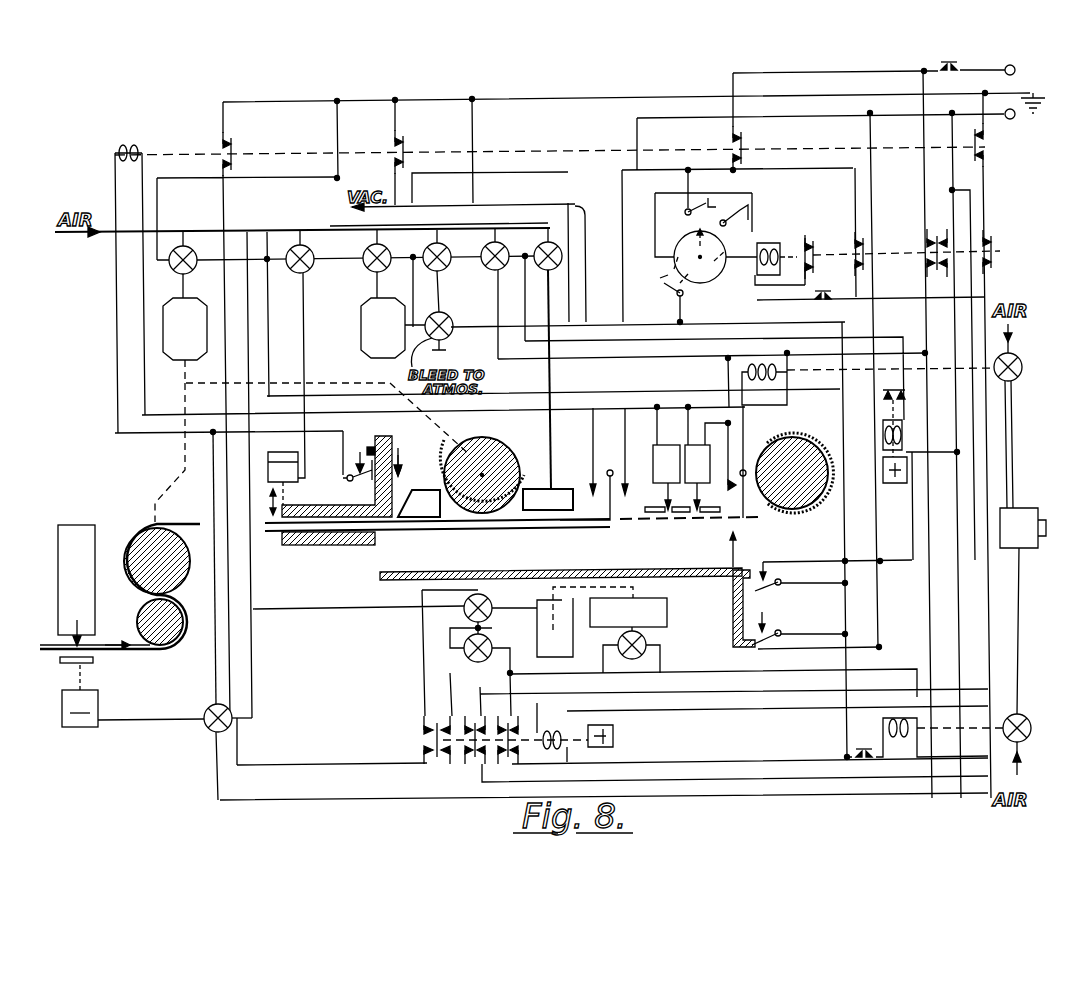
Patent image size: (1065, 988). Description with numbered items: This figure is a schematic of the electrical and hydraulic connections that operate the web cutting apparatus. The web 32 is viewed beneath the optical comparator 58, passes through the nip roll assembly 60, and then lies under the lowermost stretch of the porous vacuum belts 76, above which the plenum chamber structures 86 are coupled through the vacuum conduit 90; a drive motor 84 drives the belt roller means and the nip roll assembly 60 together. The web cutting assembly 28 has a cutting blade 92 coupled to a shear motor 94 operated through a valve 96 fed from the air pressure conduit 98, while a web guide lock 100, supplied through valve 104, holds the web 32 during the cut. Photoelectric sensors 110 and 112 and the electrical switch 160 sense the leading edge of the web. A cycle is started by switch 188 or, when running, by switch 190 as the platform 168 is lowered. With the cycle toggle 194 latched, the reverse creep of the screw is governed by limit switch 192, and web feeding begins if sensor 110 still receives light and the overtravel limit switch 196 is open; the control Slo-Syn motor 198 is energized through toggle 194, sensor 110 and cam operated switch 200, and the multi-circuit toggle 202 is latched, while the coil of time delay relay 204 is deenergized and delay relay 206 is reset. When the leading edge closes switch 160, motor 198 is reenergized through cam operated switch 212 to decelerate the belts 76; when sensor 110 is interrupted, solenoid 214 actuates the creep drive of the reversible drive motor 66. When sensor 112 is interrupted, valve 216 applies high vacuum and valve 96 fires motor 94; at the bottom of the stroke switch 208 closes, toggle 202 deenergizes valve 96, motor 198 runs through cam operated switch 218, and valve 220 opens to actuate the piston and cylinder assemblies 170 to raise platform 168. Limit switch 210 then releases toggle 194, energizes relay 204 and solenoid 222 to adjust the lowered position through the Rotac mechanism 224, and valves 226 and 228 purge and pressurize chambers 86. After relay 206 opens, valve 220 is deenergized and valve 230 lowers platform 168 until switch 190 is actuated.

The web cutting assembly 28 is at (370, 447).
The web 32 is at (503, 528).
The optical comparator 58 is at (124, 585).
The nip roll assembly 60 is at (186, 642).
The reversible drive motor 66 is at (1019, 510).
The vacuum belts 76 is at (504, 448).
The drive motor 84 is at (186, 360).
The plenum chamber structures 86 is at (428, 519).
The conduit 90 is at (499, 207).
The cutting blade 92 is at (312, 441).
The shear motor 94 is at (377, 305).
The valve 96 is at (366, 250).
The conduit 98 is at (259, 236).
The web guide lock 100 is at (346, 545).
The valve 104 is at (291, 361).
The photoelectric sensor 110 is at (656, 459).
The photoelectric sensor 112 is at (706, 459).
The electrical switch 160 is at (605, 474).
The platform 168 is at (603, 574).
The piston and cylinder assemblies 170 is at (541, 606).
The switch 188 is at (969, 57).
The switch 190 is at (787, 619).
The limit switch 192 is at (856, 750).
The cycle toggle 194 is at (790, 228).
The limit switch 196 is at (760, 508).
The control Slo-Syn motor 198 is at (703, 290).
The cam operated switch 200 is at (657, 298).
The multi-circuit toggle 202 is at (138, 156).
The time delay relay 204 is at (883, 433).
The delay relay 206 is at (480, 758).
The switch 208 is at (366, 482).
The limit switch 210 is at (784, 590).
The cam operated switch 212 is at (687, 218).
The solenoid 214 is at (1007, 740).
The valve 216 is at (440, 246).
The cam operated switch 218 is at (744, 216).
The valve 220 is at (466, 657).
The solenoid 222 is at (648, 643).
The Rotac mechanism 224 is at (667, 609).
The valve 226 is at (499, 252).
The valve 228 is at (581, 262).
The valve 230 is at (490, 572).